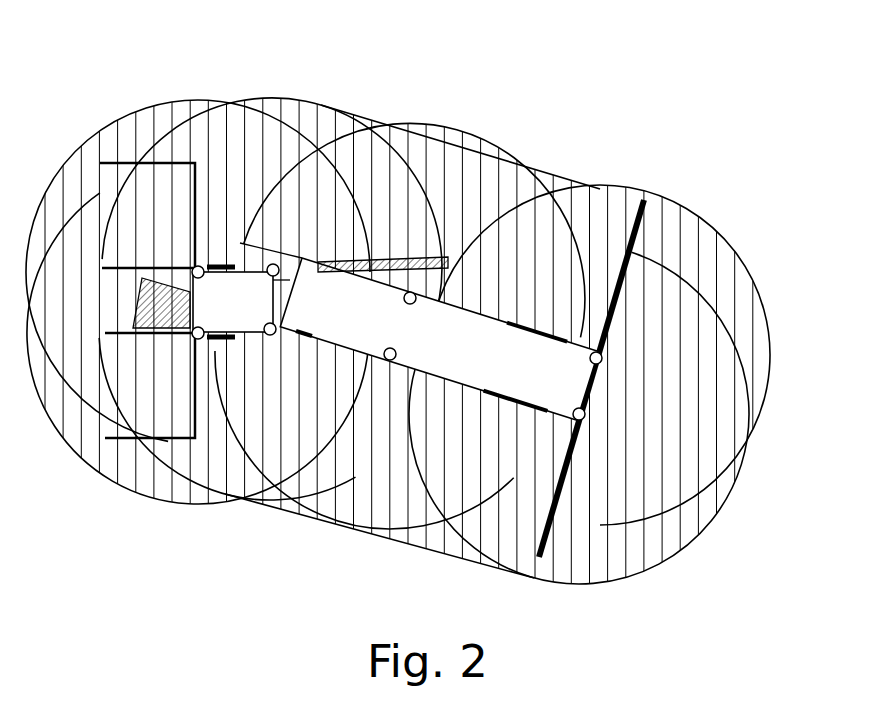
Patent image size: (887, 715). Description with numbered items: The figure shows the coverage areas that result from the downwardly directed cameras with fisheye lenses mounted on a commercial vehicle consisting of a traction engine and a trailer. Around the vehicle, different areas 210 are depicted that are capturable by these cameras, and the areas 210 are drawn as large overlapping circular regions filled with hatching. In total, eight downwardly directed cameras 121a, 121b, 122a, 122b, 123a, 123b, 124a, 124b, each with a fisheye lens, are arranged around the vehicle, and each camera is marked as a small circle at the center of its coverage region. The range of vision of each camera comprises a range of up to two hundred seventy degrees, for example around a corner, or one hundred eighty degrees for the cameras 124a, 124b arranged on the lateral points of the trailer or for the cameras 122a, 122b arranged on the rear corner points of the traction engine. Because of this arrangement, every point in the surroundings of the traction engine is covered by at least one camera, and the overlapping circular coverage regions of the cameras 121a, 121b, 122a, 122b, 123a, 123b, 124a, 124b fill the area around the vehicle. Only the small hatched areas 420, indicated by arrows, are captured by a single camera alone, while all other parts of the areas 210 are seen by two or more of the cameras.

The areas 210 is at (747, 447).
The areas captured only by one camera 420 is at (382, 276).
The downwardly directed camera 121a is at (199, 339).
The downwardly directed camera 121b is at (200, 266).
The downwardly directed camera 122a is at (274, 334).
The downwardly directed camera 122b is at (277, 265).
The downwardly directed camera 123a is at (582, 419).
The downwardly directed camera 123b is at (596, 352).
The downwardly directed camera 124a is at (392, 360).
The downwardly directed camera 124b is at (414, 293).